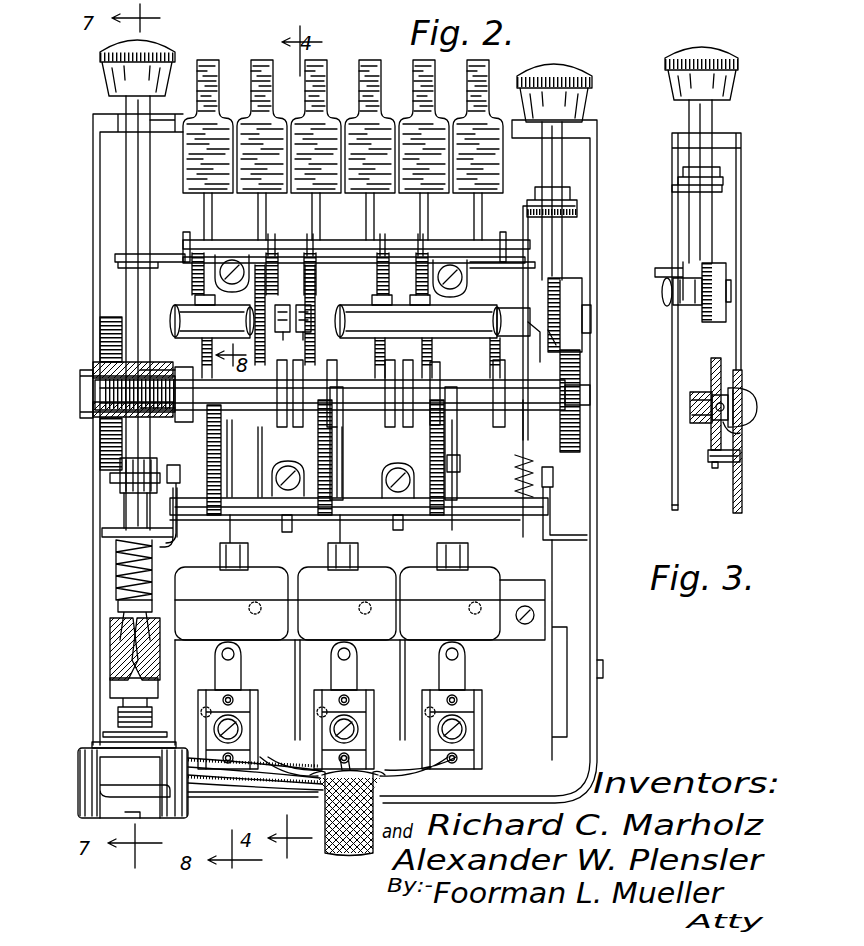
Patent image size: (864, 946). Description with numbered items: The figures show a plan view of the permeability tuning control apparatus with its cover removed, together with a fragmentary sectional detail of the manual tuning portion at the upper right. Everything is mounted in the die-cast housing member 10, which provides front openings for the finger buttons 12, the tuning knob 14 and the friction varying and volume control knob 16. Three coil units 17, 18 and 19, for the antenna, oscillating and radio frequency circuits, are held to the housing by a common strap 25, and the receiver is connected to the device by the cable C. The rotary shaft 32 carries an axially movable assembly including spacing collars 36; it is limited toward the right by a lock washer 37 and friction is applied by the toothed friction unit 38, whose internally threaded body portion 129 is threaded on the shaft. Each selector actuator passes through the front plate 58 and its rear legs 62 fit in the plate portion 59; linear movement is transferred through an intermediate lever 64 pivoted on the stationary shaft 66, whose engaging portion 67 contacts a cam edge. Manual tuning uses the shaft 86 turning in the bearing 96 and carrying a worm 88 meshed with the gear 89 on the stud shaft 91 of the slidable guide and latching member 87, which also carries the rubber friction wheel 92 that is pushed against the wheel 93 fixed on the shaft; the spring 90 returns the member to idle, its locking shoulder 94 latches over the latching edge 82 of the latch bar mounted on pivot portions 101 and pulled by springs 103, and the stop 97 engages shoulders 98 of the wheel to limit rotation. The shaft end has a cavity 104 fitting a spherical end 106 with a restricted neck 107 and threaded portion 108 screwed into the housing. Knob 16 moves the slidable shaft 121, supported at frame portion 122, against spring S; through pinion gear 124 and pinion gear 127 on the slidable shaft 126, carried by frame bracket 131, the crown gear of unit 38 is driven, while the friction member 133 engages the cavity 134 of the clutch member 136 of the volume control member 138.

In FIG. 2, the housing member 10 is at (597, 250).
In FIG. 3, the housing member 10 is at (745, 340).
In FIG. 2, the finger buttons 12 is at (374, 78).
In FIG. 2, the tuning knob 14 is at (575, 65).
In FIG. 3, the tuning knob 14 is at (718, 48).
In FIG. 2, the friction varying and volume control knob 16 is at (100, 67).
In FIG. 2, the coil unit 17 is at (490, 670).
In FIG. 2, the coil unit 18 is at (382, 670).
In FIG. 2, the coil unit 19 is at (272, 670).
In FIG. 2, the strap 25 is at (500, 600).
In FIG. 2, the rotary shaft 32 is at (95, 393).
In FIG. 2, the spacing collars 36 is at (355, 385).
In FIG. 3, the lock washer 37 is at (722, 392).
In FIG. 2, the toothed friction unit 38 is at (105, 360).
In FIG. 2, the plate 58 is at (345, 250).
In FIG. 2, the plate portion 59 is at (380, 472).
In FIG. 2, the leg 62 is at (232, 305).
In FIG. 2, the intermediate lever 64 is at (306, 302).
In FIG. 2, the stationary shaft 66 is at (355, 310).
In FIG. 2, the engaging portion 67 is at (300, 338).
In FIG. 2, the latching edge 82 is at (442, 537).
In FIG. 2, the shaft 86 is at (570, 160).
In FIG. 3, the shaft 86 is at (700, 181).
In FIG. 2, the combination guide and latching member 87 is at (522, 236).
In FIG. 2, the worm 88 is at (542, 349).
In FIG. 3, the gear 89 is at (683, 318).
In FIG. 2, the spring 90 is at (518, 465).
In FIG. 2, the stud shaft 91 is at (590, 318).
In FIG. 3, the stud shaft 91 is at (732, 294).
In FIG. 2, the friction wheel 92 is at (578, 300).
In FIG. 3, the friction wheel 92 is at (727, 268).
In FIG. 2, the wheel 93 is at (580, 380).
In FIG. 2, the locking shoulder 94 is at (512, 530).
In FIG. 3, the locking shoulder 94 is at (672, 502).
In FIG. 2, the bearing 96 is at (580, 198).
In FIG. 3, the bearing 96 is at (725, 180).
In FIG. 3, the stop 97 is at (742, 462).
In FIG. 3, the shoulders 98 is at (715, 468).
In FIG. 2, the pivot portions 101 is at (552, 486).
In FIG. 2, the springs 103 is at (250, 545).
In FIG. 3, the cavity 104 is at (690, 412).
In FIG. 3, the spherical end 106 is at (690, 400).
In FIG. 3, the restricted neck portion 107 is at (738, 430).
In FIG. 3, the threaded portion 108 is at (750, 398).
In FIG. 2, the slidable shaft 121 is at (135, 185).
In FIG. 2, the frame portion 122 is at (118, 258).
In FIG. 2, the pinion gear 124 is at (112, 492).
In FIG. 2, the slidable shaft 126 is at (130, 520).
In FIG. 2, the pinion gear 127 is at (120, 470).
In FIG. 2, the internally threaded body portion 129 is at (170, 363).
In FIG. 2, the frame bracket 131 is at (170, 536).
In FIG. 2, the friction member 133 is at (118, 606).
In FIG. 2, the cavity 134 is at (112, 633).
In FIG. 2, the clutch member 136 is at (108, 682).
In FIG. 2, the volume control member 138 is at (85, 805).
In FIG. 2, the spring S is at (120, 577).
In FIG. 2, the cable C is at (346, 845).